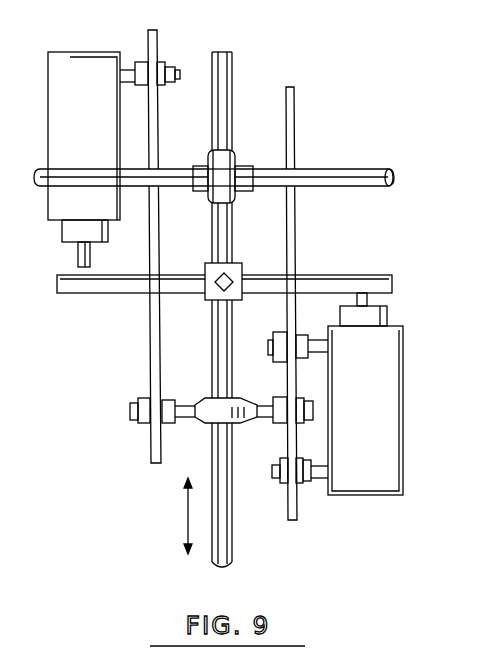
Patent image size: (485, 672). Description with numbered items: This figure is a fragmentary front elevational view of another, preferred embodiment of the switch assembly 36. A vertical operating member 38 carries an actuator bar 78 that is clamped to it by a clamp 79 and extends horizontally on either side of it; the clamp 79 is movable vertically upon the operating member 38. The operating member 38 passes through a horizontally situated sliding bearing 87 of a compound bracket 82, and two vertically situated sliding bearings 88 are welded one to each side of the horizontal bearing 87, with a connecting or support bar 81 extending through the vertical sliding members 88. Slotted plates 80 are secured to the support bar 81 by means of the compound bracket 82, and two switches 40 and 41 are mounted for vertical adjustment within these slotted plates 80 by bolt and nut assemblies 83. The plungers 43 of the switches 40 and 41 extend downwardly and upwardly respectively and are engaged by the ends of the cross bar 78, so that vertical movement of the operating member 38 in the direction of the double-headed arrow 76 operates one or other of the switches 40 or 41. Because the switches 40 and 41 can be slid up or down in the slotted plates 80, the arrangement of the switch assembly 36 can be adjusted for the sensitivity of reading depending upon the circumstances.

The switch assembly 36 is at (399, 253).
The operating member 38 is at (227, 505).
The switch 40 is at (78, 135).
The switch 41 is at (380, 425).
The plunger 43 is at (90, 256).
The double-headed arrow 76 is at (188, 526).
The actuator bar 78 is at (337, 278).
The clamp 79 is at (212, 294).
The slotted plate 80 is at (294, 131).
The support bar 81 is at (343, 170).
The compound bracket 82 is at (223, 161).
The bolt and nut assembly 83 is at (174, 68).
The horizontal sliding bearing 87 is at (243, 191).
The vertical sliding bearing 88 is at (211, 200).